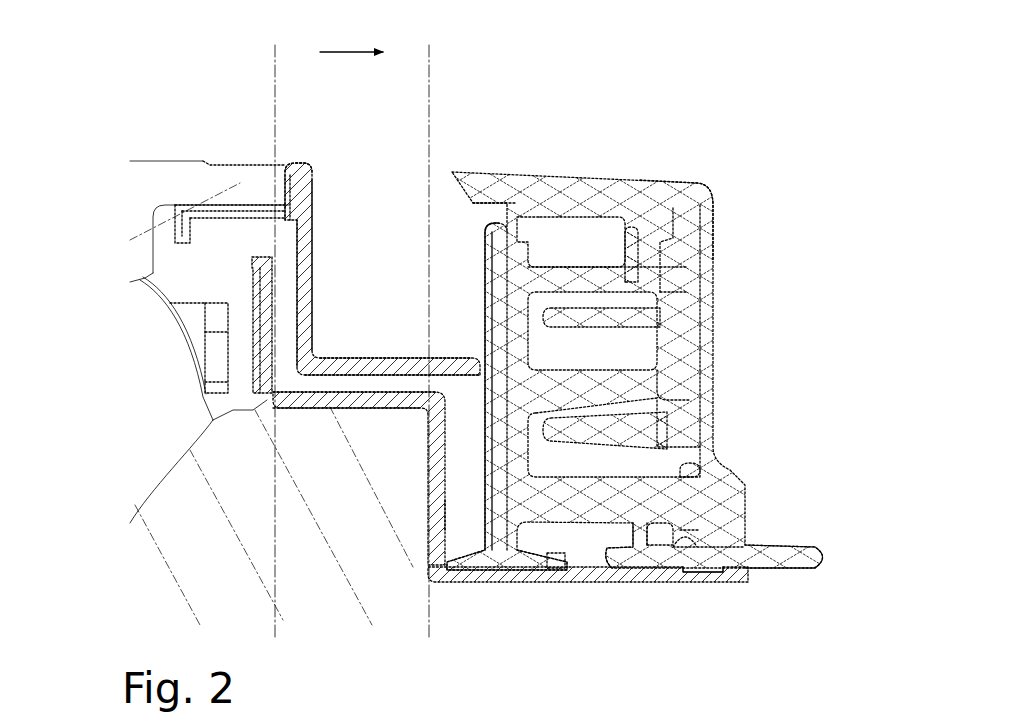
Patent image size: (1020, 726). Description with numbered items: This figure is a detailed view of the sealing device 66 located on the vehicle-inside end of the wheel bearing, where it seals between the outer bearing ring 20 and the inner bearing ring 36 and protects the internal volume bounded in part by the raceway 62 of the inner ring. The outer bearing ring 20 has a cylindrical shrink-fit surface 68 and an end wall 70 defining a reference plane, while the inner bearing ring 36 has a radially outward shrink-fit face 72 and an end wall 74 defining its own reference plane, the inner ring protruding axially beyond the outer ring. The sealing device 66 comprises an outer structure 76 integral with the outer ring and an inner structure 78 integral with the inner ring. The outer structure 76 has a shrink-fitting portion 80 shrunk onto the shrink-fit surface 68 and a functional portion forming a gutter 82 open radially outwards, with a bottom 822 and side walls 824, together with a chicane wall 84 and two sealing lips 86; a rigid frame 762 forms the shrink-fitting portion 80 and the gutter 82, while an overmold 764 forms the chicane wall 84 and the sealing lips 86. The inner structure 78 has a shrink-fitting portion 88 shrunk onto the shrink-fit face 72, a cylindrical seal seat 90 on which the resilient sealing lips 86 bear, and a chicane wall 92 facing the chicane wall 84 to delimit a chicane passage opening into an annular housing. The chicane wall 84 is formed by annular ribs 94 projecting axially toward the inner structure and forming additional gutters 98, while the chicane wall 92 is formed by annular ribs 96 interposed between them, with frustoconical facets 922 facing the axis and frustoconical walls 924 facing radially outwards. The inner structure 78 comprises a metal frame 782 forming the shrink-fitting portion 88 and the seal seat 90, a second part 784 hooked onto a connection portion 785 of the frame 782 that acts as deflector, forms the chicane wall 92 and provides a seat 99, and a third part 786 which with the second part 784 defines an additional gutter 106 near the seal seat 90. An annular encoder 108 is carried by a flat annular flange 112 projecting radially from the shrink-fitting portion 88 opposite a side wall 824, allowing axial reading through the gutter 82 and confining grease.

The outer bearing ring 20 is at (146, 160).
The inner bearing ring 36 is at (207, 573).
The raceway 62 is at (183, 475).
The sealing device 66 is at (668, 96).
The shrink-fit surface 68 is at (212, 212).
The end wall 70 is at (284, 170).
The shrink-fit face 72 is at (323, 404).
The end wall 74 is at (434, 517).
The outer structure 76 is at (475, 418).
The inner structure 78 is at (670, 668).
The shrink-fitting portion 80 is at (240, 212).
The gutter 82 is at (384, 168).
The chicane wall 84 is at (532, 238).
The sealing lips 86 is at (473, 562).
The shrink-fitting portion 88 is at (305, 400).
The seal seat 90 is at (507, 560).
The chicane wall 92 is at (678, 382).
The annular ribs 94 is at (588, 277).
The annular ribs 96 is at (602, 195).
The additional gutters 98 is at (613, 265).
The seat 99 is at (793, 563).
The additional gutter 106 is at (690, 530).
The encoder 108 is at (280, 332).
The flat annular flange 112 is at (253, 293).
The rigid frame 762 is at (308, 162).
The overmold 764 is at (518, 232).
The frame 782 is at (280, 394).
The second part 784 is at (683, 188).
The connection portion 785 is at (732, 578).
The third part 786 is at (640, 540).
The bottom 822 is at (362, 358).
The side walls 824 is at (312, 244).
The frustoconical facets 922 is at (630, 326).
The frustoconical walls 924 is at (632, 288).